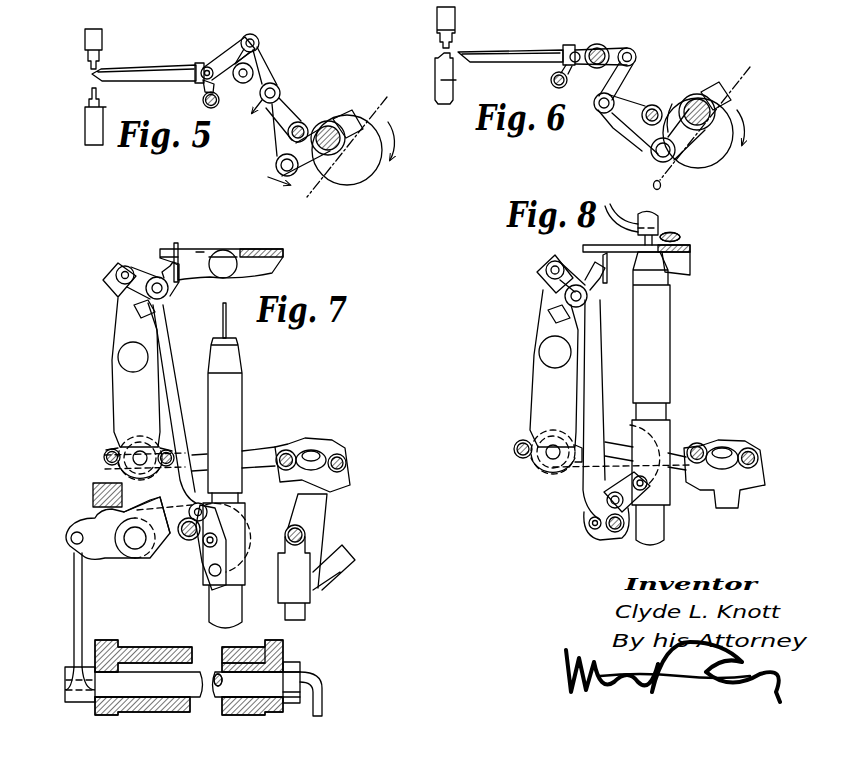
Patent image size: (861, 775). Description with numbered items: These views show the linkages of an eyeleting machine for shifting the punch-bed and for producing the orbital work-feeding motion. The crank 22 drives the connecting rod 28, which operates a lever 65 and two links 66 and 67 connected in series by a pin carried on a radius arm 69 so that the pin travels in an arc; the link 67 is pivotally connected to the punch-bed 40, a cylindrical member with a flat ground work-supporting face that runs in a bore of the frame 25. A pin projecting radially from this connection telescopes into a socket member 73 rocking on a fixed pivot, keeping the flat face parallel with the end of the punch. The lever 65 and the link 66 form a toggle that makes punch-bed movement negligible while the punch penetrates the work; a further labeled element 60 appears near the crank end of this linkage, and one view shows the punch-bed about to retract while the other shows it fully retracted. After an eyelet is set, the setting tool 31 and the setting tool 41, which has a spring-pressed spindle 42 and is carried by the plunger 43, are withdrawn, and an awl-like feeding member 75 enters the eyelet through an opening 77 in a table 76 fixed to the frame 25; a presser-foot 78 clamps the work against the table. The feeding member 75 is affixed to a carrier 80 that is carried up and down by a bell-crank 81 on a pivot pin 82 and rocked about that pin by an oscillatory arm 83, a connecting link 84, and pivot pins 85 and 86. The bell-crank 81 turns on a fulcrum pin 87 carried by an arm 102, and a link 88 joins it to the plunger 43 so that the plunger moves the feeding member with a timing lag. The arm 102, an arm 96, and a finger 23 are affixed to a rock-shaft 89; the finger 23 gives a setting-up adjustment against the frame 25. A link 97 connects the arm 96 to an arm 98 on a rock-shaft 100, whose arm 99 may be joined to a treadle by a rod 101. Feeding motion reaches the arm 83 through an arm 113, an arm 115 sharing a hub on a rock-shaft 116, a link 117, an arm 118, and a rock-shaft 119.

In FIG. 5, the crank 22 is at (330, 124).
In FIG. 7, the finger 23 is at (138, 476).
In FIG. 7, the frame 25 is at (92, 494).
In FIG. 8, the frame 25 is at (692, 273).
In FIG. 5, the connecting rod 28 is at (308, 172).
In FIG. 6, the connecting rod 28 is at (672, 130).
In FIG. 5, the setting tool 31 is at (85, 63).
In FIG. 8, the setting tool 31 is at (659, 218).
In FIG. 5, the punch-bed 40 is at (140, 82).
In FIG. 6, the punch-bed 40 is at (500, 62).
In FIG. 7, the punch-bed 40 is at (226, 250).
In FIG. 5, the setting tool 41 is at (85, 116).
In FIG. 7, the setting tool 41 is at (242, 347).
In FIG. 7, the spring-pressed spindle 42 is at (223, 320).
In FIG. 7, the plunger 43 is at (238, 610).
In FIG. 8, the plunger 43 is at (662, 350).
In FIG. 5, the crank lever 60 is at (288, 133).
In FIG. 6, the crank lever 60 is at (648, 126).
In FIG. 5, the lever 65 is at (286, 105).
In FIG. 6, the lever 65 is at (624, 122).
In FIG. 5, the link 66 is at (258, 62).
In FIG. 6, the link 66 is at (620, 81).
In FIG. 5, the link 67 is at (220, 60).
In FIG. 6, the link 67 is at (622, 49).
In FIG. 6, the radius arm 69 is at (597, 44).
In FIG. 5, the socket member 73 is at (203, 94).
In FIG. 7, the feeding member 75 is at (177, 244).
In FIG. 8, the feeding member 75 is at (600, 268).
In FIG. 7, the table 76 is at (284, 253).
In FIG. 8, the table 76 is at (692, 247).
In FIG. 7, the opening 77 is at (200, 254).
In FIG. 8, the opening 77 is at (623, 256).
In FIG. 8, the presser-foot 78 is at (680, 234).
In FIG. 7, the carrier 80 is at (178, 406).
In FIG. 8, the carrier 80 is at (592, 390).
In FIG. 7, the bell-crank 81 is at (205, 575).
In FIG. 8, the bell-crank 81 is at (590, 512).
In FIG. 7, the pivot pin 82 is at (203, 506).
In FIG. 8, the pivot pin 82 is at (588, 526).
In FIG. 7, the oscillatory arm 83 is at (118, 320).
In FIG. 8, the oscillatory arm 83 is at (542, 326).
In FIG. 7, the connecting link 84 is at (146, 272).
In FIG. 7, the pivot pin 85 is at (119, 268).
In FIG. 7, the pivot pin 86 is at (170, 293).
In FIG. 7, the fulcrum pin 87 is at (188, 542).
In FIG. 8, the fulcrum pin 87 is at (612, 536).
In FIG. 7, the link 88 is at (243, 550).
In FIG. 8, the link 88 is at (620, 450).
In FIG. 7, the rock-shaft 89 is at (124, 543).
In FIG. 7, the arm 96 is at (77, 530).
In FIG. 7, the link 97 is at (74, 632).
In FIG. 7, the arm 98 is at (75, 703).
In FIG. 7, the arm 99 is at (304, 663).
In FIG. 7, the rock-shaft 100 is at (172, 692).
In FIG. 7, the rod 101 is at (325, 690).
In FIG. 7, the arm 102 is at (168, 532).
In FIG. 7, the arm 113 is at (338, 563).
In FIG. 7, the arm 115 is at (320, 508).
In FIG. 7, the rock-shaft 116 is at (312, 548).
In FIG. 7, the link 117 is at (258, 462).
In FIG. 8, the link 117 is at (686, 450).
In FIG. 7, the arm 118 is at (112, 392).
In FIG. 8, the arm 118 is at (534, 392).
In FIG. 7, the rock-shaft 119 is at (118, 355).
In FIG. 8, the rock-shaft 119 is at (540, 353).